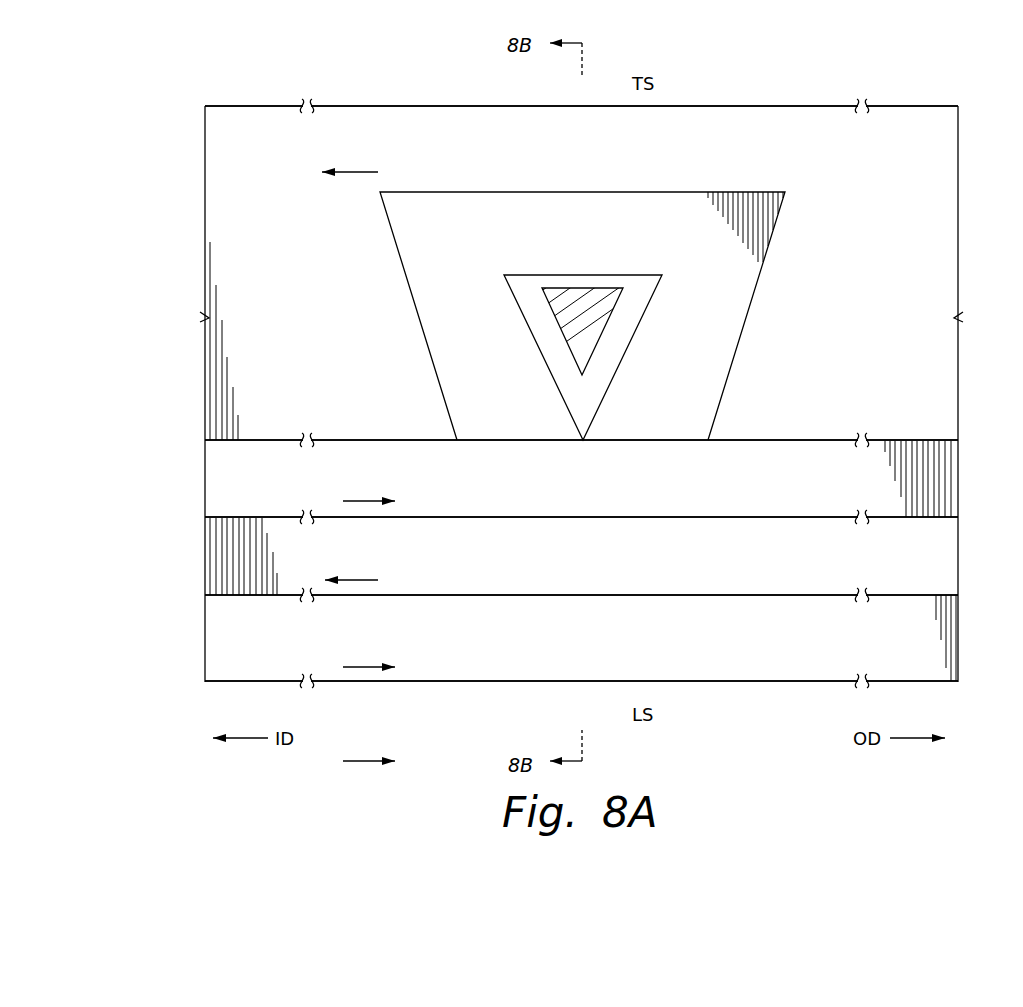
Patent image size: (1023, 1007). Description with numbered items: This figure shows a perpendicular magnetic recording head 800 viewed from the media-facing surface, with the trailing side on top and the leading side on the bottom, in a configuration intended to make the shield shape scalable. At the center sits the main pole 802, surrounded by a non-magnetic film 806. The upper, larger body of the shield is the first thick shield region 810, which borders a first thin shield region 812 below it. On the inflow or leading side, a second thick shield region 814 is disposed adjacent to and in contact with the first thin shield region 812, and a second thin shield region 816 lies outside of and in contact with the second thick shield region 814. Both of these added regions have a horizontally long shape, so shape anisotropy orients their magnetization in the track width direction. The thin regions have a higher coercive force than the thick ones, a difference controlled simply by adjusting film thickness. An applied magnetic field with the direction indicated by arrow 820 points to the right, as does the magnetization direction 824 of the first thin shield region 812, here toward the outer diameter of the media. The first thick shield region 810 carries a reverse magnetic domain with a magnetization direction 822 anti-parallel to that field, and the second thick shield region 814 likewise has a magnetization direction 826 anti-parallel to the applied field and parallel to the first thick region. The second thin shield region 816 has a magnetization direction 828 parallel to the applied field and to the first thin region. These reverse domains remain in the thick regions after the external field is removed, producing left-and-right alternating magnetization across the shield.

The perpendicular magnetic recording head 800 is at (228, 70).
The main pole 802 is at (578, 298).
The non-magnetic film 806 is at (585, 410).
The first thick shield region 810 is at (958, 148).
The first thin shield region 812 is at (958, 480).
The second thick shield region 814 is at (958, 555).
The second thin shield region 816 is at (958, 638).
The applied magnetic field magnetization direction 820 is at (360, 759).
The magnetization direction of first thick shield region 822 is at (360, 168).
The magnetization direction of first thin shield region 824 is at (360, 499).
The magnetization direction of second thick shield region 826 is at (360, 578).
The magnetization direction of second thin shield region 828 is at (360, 665).